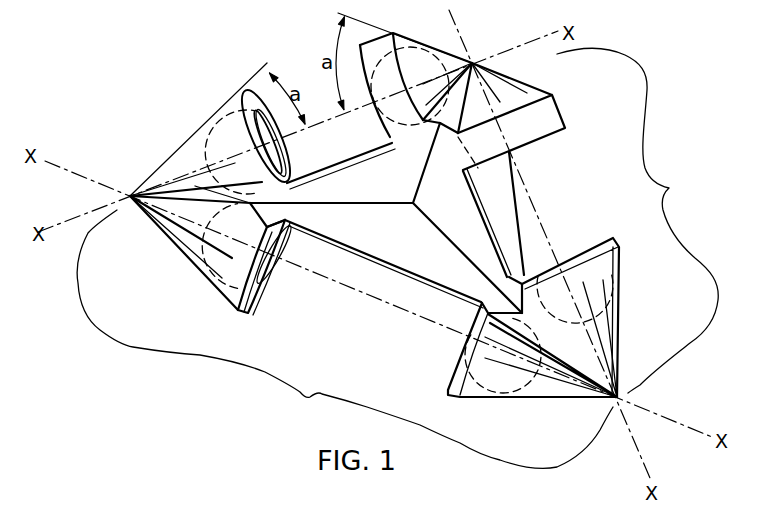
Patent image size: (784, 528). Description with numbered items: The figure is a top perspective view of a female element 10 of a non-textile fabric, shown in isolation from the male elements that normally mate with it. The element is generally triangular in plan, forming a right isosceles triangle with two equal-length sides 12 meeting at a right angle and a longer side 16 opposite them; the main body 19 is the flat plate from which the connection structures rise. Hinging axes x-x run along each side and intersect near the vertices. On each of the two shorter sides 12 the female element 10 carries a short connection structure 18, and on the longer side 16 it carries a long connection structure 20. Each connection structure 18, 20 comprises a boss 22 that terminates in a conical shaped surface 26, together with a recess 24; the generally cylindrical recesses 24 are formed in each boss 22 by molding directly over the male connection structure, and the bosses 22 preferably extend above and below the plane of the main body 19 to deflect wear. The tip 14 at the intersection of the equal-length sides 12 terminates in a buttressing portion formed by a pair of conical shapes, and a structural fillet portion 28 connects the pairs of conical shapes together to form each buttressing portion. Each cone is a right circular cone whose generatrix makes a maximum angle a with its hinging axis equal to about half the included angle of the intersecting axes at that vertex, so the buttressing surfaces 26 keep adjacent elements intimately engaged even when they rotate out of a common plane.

The female element 10 is at (121, 52).
The equal-length sides 12 is at (637, 221).
The tip 14 is at (473, 63).
The longer side 16 is at (345, 339).
The short connection structure 18 is at (575, 119).
The main body 19 is at (387, 238).
The long connection structure 20 is at (210, 293).
The boss 22 is at (240, 97).
The recess 24 is at (266, 286).
The conical shaped surface 26 is at (187, 153).
The structural fillet portion 28 is at (192, 204).